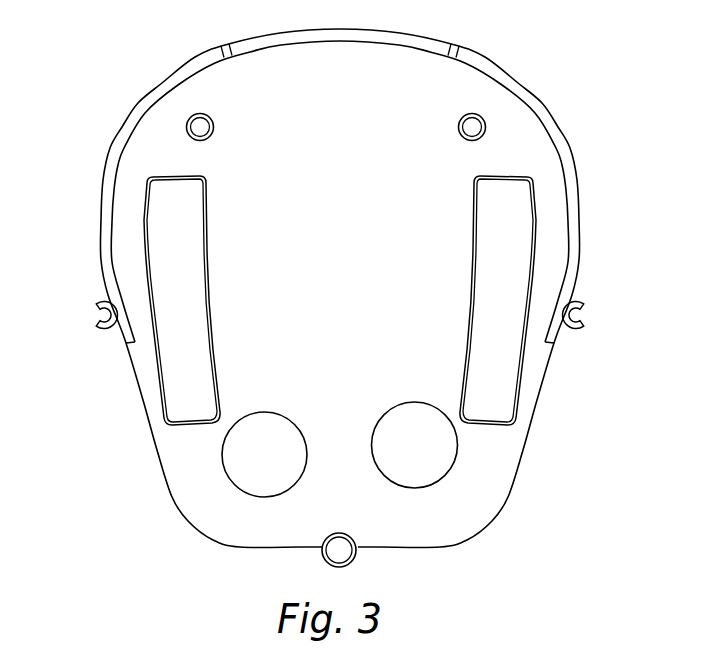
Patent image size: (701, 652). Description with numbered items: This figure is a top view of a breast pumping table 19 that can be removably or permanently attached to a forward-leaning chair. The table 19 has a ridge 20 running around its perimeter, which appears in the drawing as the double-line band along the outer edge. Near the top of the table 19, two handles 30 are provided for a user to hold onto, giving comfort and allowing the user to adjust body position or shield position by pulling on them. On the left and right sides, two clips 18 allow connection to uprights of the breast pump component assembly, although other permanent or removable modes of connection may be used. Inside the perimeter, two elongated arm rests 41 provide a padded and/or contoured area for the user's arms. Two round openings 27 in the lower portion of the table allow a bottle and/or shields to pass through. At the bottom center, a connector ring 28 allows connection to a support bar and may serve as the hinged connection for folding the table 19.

The ridge 20 is at (128, 110).
The table 19 is at (460, 105).
The handles 30 is at (198, 113).
The clips 18 is at (97, 296).
The arm rests 41 is at (188, 390).
The circular openings 27 is at (242, 462).
The connector ring 28 is at (322, 553).